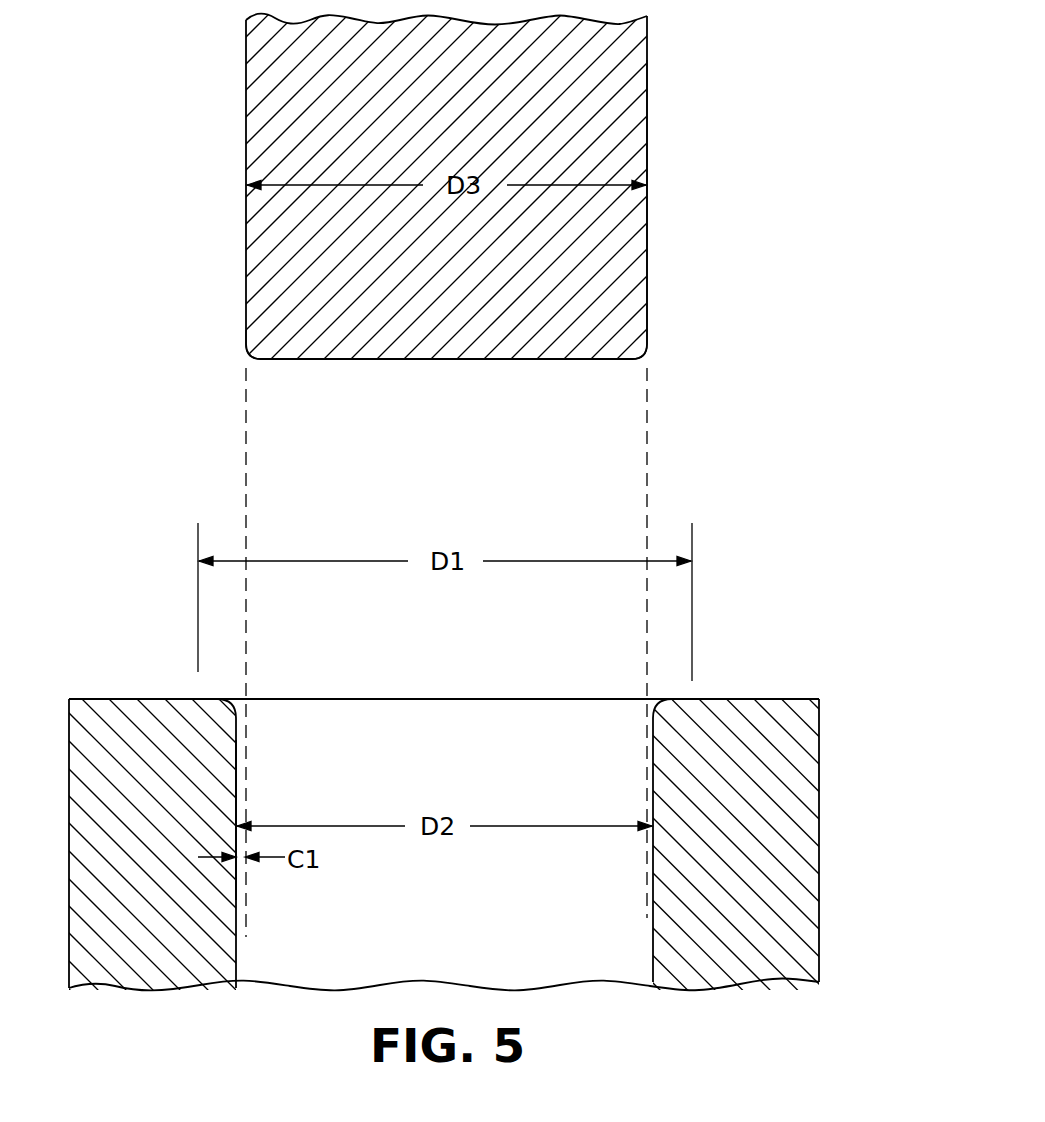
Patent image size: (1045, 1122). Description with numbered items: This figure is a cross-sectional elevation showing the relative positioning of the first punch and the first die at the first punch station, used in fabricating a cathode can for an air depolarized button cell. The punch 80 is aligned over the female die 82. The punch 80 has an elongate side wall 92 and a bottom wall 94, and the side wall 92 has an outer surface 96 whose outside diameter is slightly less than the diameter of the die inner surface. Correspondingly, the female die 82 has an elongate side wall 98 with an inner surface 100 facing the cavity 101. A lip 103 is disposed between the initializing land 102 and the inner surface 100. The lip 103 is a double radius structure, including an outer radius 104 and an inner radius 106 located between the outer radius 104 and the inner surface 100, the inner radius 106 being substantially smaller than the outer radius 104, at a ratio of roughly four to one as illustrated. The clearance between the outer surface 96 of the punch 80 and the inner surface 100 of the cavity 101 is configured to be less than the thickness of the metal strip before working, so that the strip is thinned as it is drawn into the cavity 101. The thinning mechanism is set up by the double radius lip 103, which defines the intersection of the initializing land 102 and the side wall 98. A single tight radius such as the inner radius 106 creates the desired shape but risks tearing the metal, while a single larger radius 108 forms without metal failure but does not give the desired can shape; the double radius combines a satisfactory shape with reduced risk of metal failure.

The punch 80 is at (652, 85).
The female die 82 is at (824, 696).
The side wall 92 is at (652, 232).
The bottom wall 94 is at (457, 360).
The outer surface 96 is at (649, 318).
The side wall 98 is at (241, 960).
The inner surface 100 is at (236, 898).
The cavity 101 is at (563, 753).
The initializing land 102 is at (108, 699).
The lip 103 is at (228, 696).
The outer radius 104 is at (216, 722).
The inner radius 106 is at (243, 696).
The single larger radius 108 is at (258, 350).